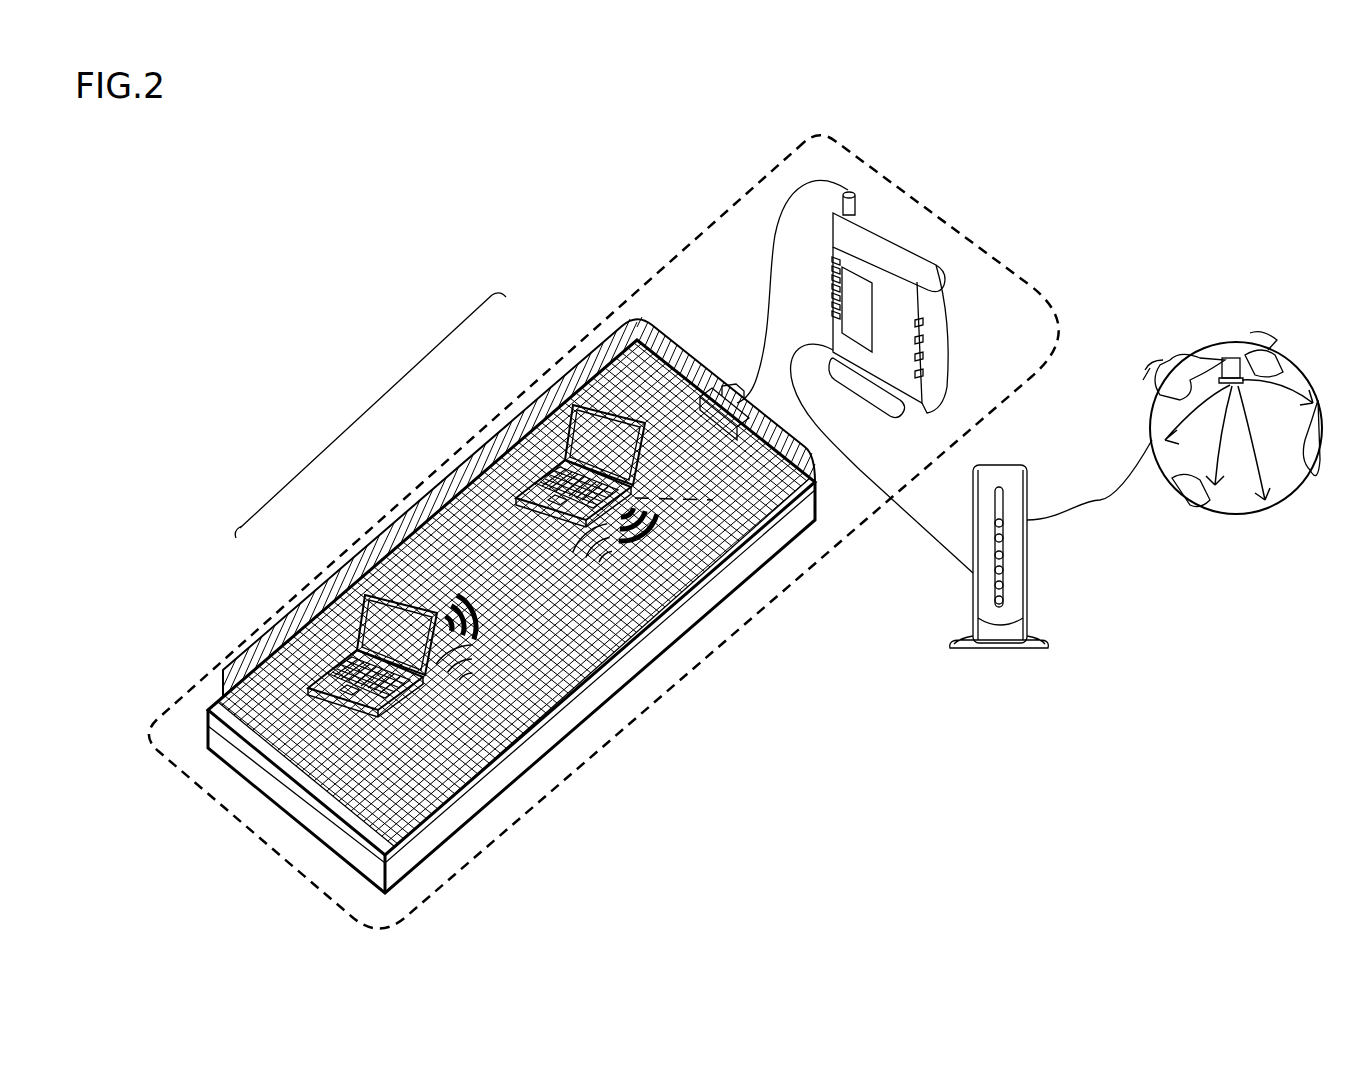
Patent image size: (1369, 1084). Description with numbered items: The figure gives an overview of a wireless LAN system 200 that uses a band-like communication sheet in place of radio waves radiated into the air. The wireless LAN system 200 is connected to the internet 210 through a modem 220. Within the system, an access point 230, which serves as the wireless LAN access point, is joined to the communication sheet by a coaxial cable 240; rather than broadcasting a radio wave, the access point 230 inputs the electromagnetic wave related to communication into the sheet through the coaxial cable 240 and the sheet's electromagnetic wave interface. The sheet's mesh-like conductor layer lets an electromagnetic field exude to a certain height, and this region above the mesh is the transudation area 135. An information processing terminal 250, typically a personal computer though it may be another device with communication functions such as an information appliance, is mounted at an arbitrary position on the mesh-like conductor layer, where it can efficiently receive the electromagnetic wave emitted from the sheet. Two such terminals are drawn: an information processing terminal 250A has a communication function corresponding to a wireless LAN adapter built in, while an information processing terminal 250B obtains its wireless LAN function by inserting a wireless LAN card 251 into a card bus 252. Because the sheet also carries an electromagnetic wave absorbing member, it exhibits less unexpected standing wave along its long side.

The transudation area 135 is at (262, 628).
The wireless LAN system 200 is at (1030, 285).
The internet 210 is at (1235, 516).
The modem 220 is at (1028, 582).
The access point 230 is at (900, 222).
The coaxial cable 240 is at (776, 262).
The information processing terminal 250 is at (519, 495).
The information processing terminal 250A is at (335, 600).
The information processing terminal 250B is at (545, 400).
The wireless LAN card 251 is at (700, 498).
The card bus 252 is at (718, 490).